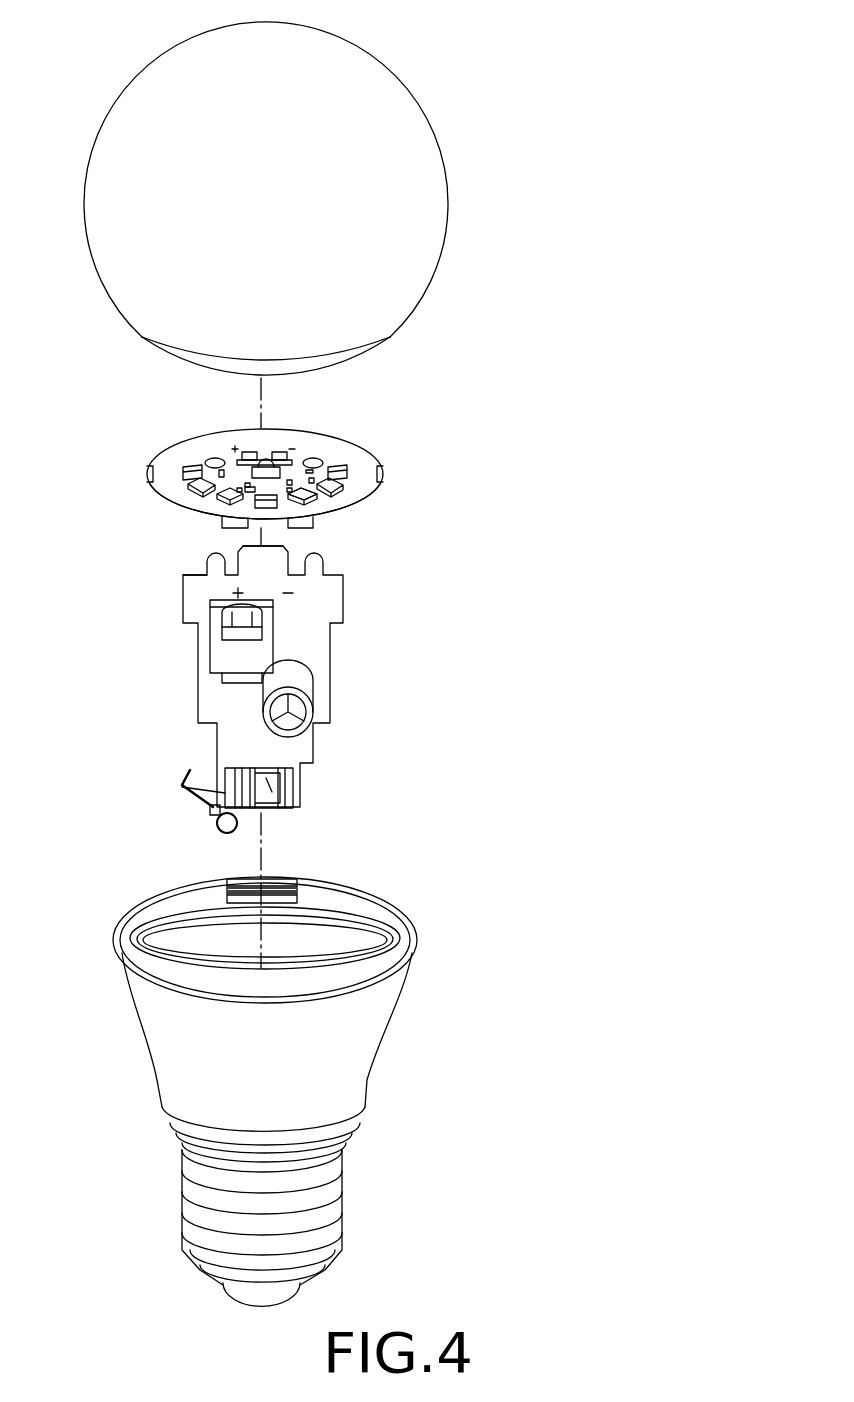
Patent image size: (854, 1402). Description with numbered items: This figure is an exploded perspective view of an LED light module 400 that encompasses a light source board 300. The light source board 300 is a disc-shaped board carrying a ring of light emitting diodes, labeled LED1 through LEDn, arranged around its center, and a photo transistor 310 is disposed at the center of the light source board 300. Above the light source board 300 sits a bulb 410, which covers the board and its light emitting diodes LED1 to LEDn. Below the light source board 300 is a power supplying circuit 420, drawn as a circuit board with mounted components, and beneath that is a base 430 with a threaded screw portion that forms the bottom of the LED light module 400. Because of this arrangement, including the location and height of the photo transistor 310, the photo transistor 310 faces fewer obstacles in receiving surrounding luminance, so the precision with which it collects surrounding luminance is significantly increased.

The LED light module 400 is at (518, 107).
The bulb 410 is at (430, 170).
The light source board 300 is at (363, 446).
The photo transistor 310 is at (268, 458).
The first light emitting diode LED1 is at (340, 483).
The n-th light emitting diode LEDn is at (317, 498).
The power supplying circuit 420 is at (330, 662).
The base 430 is at (347, 1057).